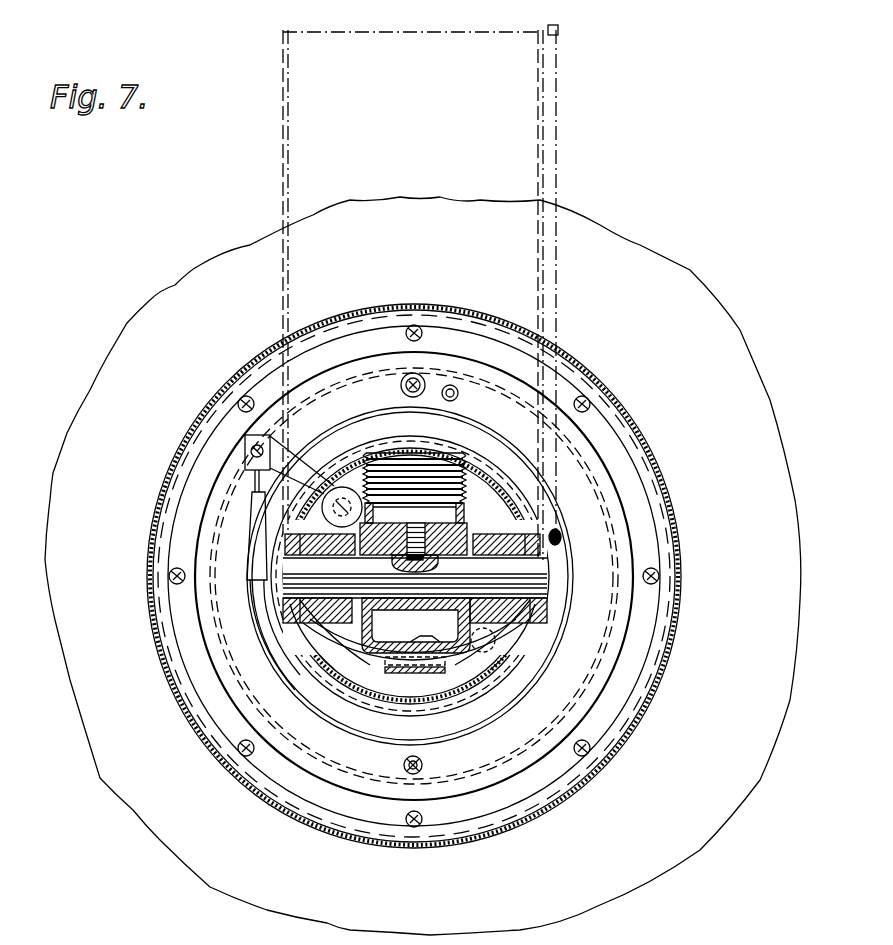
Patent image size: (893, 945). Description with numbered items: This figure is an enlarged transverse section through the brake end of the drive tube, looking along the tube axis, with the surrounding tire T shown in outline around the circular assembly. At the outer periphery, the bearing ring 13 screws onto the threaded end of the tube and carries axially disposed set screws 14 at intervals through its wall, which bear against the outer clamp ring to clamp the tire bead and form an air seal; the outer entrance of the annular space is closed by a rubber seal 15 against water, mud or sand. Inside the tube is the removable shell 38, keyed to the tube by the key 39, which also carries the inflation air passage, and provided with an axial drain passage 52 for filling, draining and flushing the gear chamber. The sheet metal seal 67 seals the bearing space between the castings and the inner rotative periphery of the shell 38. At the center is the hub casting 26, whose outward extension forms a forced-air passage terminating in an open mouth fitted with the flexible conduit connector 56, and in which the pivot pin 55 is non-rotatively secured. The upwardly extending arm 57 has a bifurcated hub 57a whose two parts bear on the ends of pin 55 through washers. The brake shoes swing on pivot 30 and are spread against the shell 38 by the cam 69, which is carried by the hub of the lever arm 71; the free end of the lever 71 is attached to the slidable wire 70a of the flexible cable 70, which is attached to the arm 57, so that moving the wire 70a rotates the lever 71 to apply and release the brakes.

The tire T is at (103, 358).
The bearing ring 13 is at (192, 703).
The set screws 14 is at (418, 328).
The rubber seal 15 is at (183, 433).
The hub casting 26 is at (425, 618).
The pivot 30 is at (490, 637).
The shell 38 is at (457, 768).
The key 39 is at (403, 391).
The drain passage 52 is at (404, 765).
The pivot pin 55 is at (391, 583).
The flexible conduit connector 56 is at (445, 437).
The arm 57 is at (497, 35).
The bifurcated hub 57a is at (502, 533).
The sheet metal seal 67 is at (455, 730).
The cam 69 is at (345, 487).
The flexible cable 70 is at (262, 577).
The slidable wire 70a is at (243, 479).
The lever arm 71 is at (318, 458).